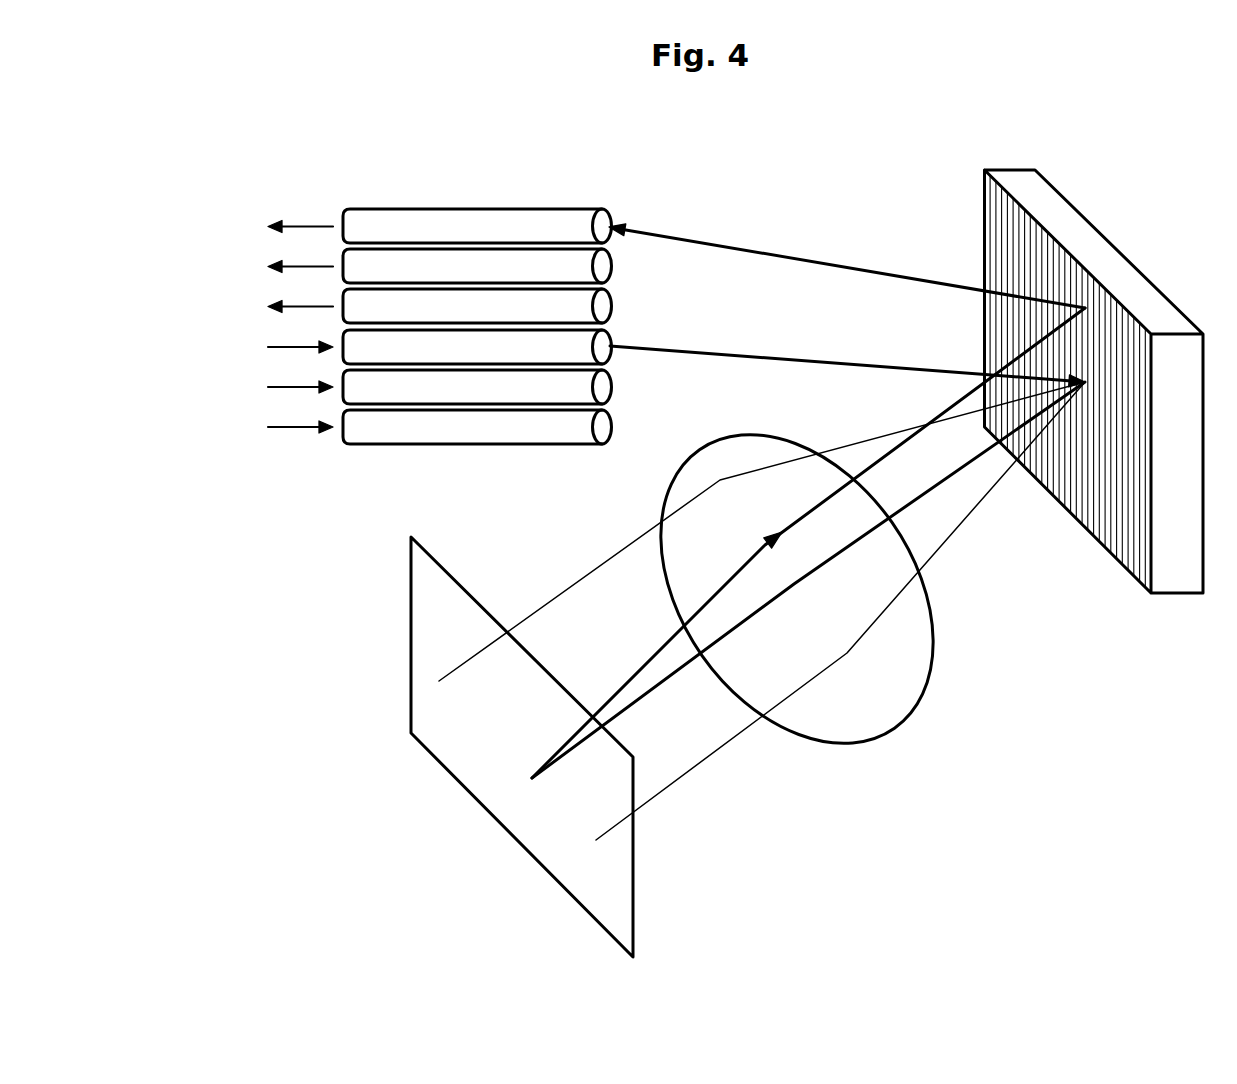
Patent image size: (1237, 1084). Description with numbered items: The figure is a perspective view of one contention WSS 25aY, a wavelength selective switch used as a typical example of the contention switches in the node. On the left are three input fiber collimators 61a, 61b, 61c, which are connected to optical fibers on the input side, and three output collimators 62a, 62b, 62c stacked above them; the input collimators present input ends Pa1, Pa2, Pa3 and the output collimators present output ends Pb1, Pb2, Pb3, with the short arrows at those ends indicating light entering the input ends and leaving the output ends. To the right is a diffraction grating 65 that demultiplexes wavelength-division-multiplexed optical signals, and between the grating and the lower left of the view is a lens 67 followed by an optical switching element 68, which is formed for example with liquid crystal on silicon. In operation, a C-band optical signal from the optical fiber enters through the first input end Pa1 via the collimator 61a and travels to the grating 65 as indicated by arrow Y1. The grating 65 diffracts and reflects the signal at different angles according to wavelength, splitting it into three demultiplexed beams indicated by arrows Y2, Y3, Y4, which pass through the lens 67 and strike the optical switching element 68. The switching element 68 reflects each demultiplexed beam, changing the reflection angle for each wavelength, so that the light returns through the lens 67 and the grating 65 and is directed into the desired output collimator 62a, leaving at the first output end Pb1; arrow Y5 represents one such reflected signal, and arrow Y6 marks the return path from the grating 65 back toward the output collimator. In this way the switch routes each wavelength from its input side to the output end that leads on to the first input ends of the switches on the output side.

The contention WSS 25aY is at (768, 207).
The input fiber collimator 61a is at (540, 342).
The input fiber collimator 61b is at (470, 385).
The input fiber collimator 61c is at (407, 427).
The output collimator 62a is at (410, 222).
The output collimator 62b is at (473, 263).
The output collimator 62c is at (543, 305).
The first input end Pa1 is at (343, 332).
The emitted light beam Pa2 is at (343, 372).
The emitted light beam Pa3 is at (343, 412).
The first output end Pb1 is at (343, 212).
The received light beam Pb2 is at (343, 252).
The received light beam Pb3 is at (343, 292).
The grating 65 is at (1108, 262).
The lens 67 is at (908, 718).
The optical switching element 68 is at (635, 885).
The arrow Y1 is at (815, 361).
The arrow Y2 is at (574, 585).
The arrow Y3 is at (647, 695).
The arrow Y4 is at (704, 758).
The arrow Y5 is at (637, 671).
The light beam Y6 is at (827, 262).